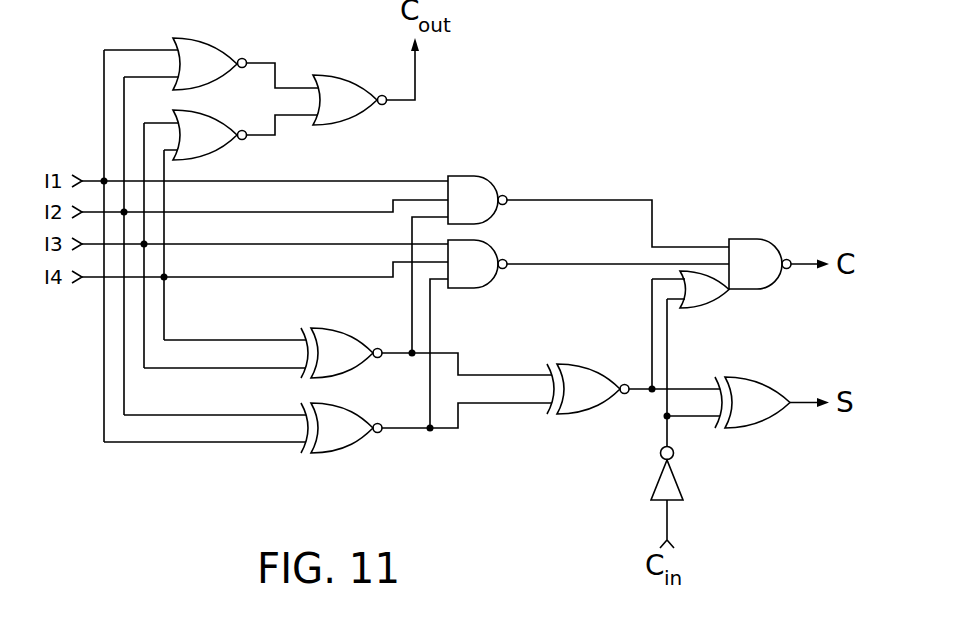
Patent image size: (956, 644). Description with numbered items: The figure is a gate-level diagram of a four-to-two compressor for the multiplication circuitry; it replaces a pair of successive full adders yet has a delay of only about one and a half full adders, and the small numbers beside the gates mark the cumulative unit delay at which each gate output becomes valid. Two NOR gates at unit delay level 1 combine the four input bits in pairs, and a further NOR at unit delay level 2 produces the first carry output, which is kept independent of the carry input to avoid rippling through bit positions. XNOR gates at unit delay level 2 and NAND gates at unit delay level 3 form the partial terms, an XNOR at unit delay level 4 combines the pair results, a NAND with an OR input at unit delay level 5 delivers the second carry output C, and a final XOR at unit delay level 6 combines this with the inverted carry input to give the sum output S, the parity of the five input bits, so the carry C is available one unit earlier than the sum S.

The unit delay level one 1 is at (219, 96).
The unit delay level two 2 is at (480, 304).
The unit delay level three 3 is at (565, 336).
The unit delay level four 4 is at (595, 387).
The unit delay level five 5 is at (743, 273).
The unit delay level six 6 is at (761, 402).